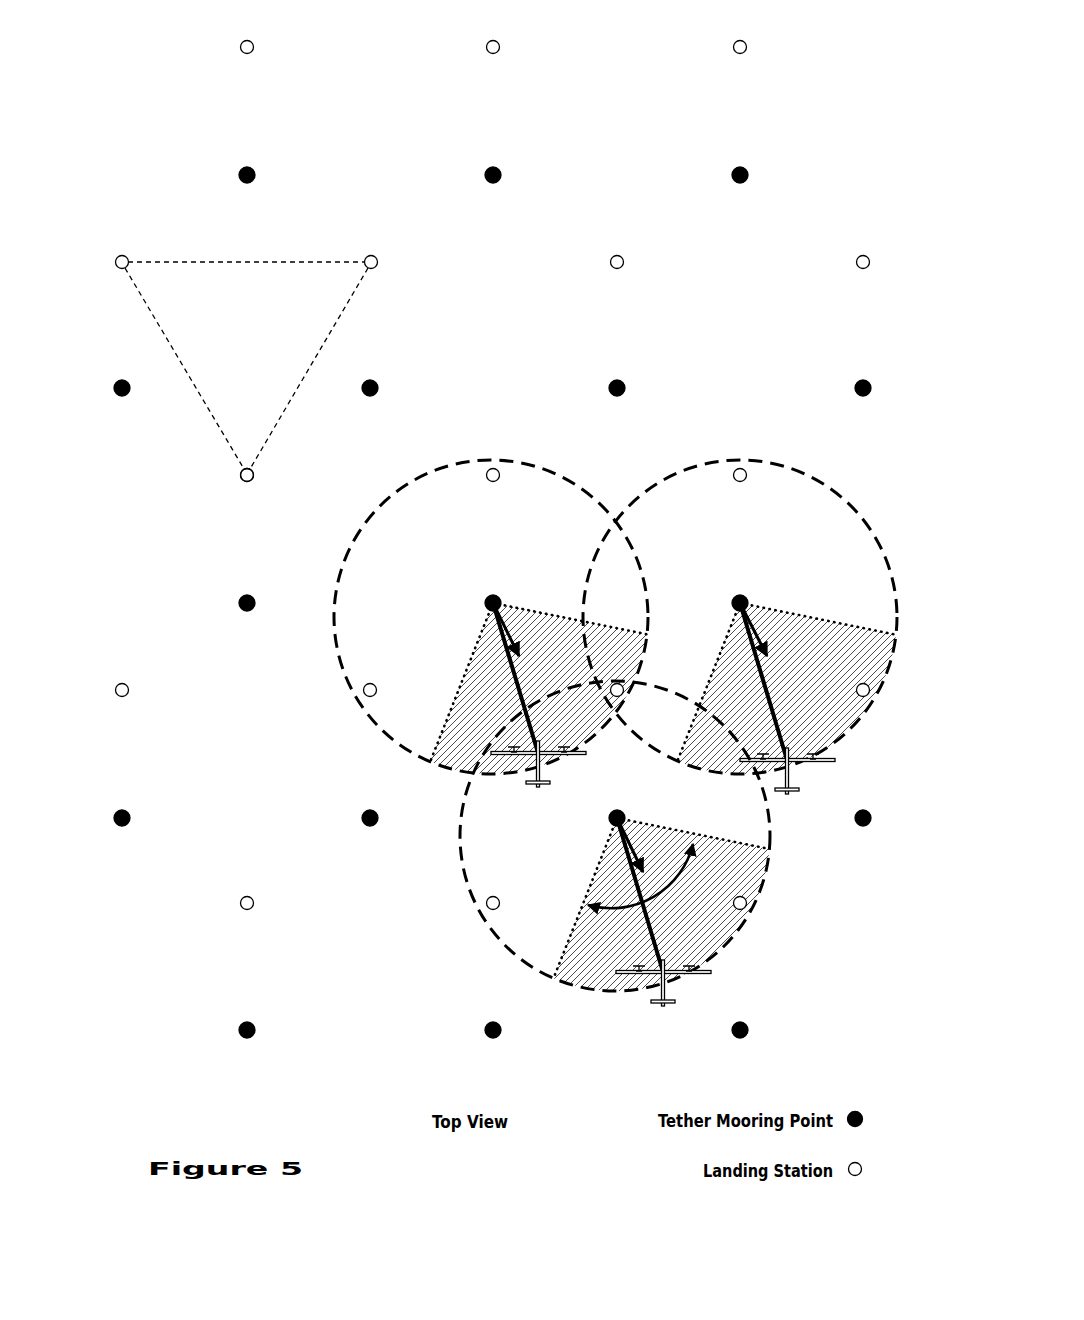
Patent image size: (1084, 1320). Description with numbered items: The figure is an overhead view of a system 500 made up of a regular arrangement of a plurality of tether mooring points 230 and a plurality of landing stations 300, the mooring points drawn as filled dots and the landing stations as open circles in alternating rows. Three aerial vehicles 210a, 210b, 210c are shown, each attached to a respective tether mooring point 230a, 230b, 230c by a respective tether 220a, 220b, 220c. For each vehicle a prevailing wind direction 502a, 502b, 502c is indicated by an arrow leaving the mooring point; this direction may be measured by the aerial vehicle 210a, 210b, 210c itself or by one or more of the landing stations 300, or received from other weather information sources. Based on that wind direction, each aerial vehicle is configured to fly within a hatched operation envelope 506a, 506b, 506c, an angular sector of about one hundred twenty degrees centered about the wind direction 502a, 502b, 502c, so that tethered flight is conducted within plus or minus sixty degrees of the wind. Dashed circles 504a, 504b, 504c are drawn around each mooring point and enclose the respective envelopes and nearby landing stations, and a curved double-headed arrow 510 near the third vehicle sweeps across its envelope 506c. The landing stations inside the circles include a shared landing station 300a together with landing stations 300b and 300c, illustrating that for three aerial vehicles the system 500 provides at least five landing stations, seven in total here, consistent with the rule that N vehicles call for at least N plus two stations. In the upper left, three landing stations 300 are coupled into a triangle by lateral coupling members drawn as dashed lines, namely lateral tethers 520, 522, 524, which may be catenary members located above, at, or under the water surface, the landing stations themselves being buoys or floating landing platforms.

The system 500 is at (832, 140).
The tether mooring points 230 is at (370, 147).
The landing stations 300 is at (494, 233).
The lateral tether 520 is at (239, 354).
The lateral tether 522 is at (177, 368).
The lateral tether 524 is at (309, 368).
The flight range circle of first aerial vehicle 504a is at (491, 593).
The flight range circle of second aerial vehicle 504b is at (740, 600).
The flight range circle of third aerial vehicle 504c is at (649, 836).
The operation envelope 506a is at (518, 688).
The operation envelope 506b is at (778, 688).
The operation envelope 506c is at (625, 904).
The tether 220a is at (471, 678).
The tether 220b is at (726, 681).
The tether 220c is at (597, 895).
The prevailing wind direction 502a is at (529, 619).
The prevailing wind direction 502b is at (777, 621).
The prevailing wind direction 502c is at (653, 836).
The tether mooring point 230a is at (461, 584).
The tether mooring point 230b is at (710, 589).
The tether mooring point 230c is at (588, 825).
The aerial vehicle 210a is at (526, 783).
The aerial vehicle 210b is at (776, 789).
The aerial vehicle 210c is at (652, 1001).
The shared landing station 300a is at (649, 706).
The landing station of second aerial vehicle 300b is at (887, 720).
The landing station of third aerial vehicle 300c is at (774, 920).
The range of motion arc 510 is at (677, 910).